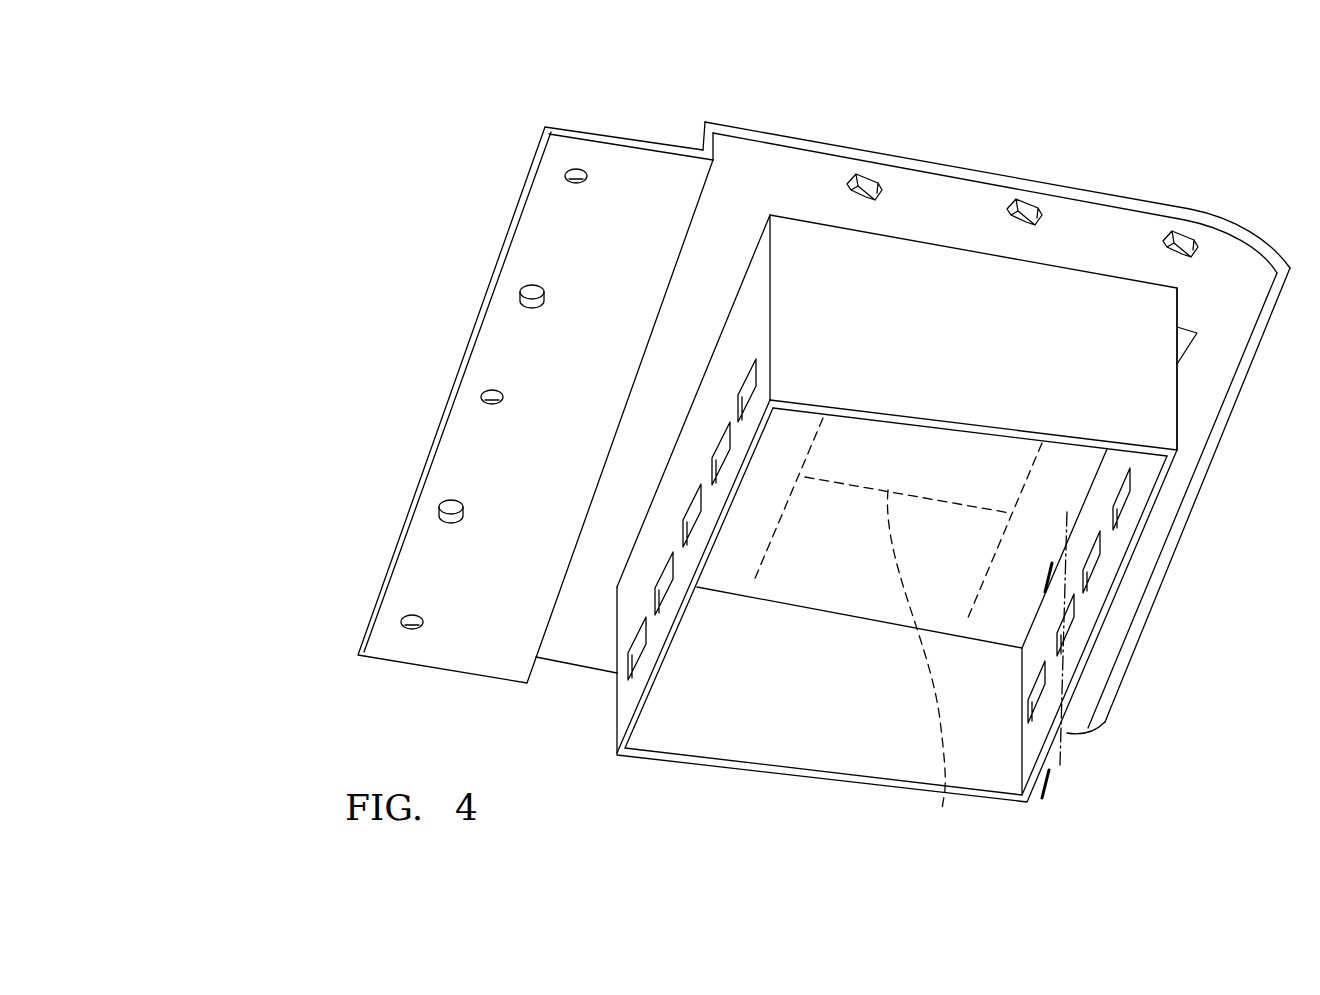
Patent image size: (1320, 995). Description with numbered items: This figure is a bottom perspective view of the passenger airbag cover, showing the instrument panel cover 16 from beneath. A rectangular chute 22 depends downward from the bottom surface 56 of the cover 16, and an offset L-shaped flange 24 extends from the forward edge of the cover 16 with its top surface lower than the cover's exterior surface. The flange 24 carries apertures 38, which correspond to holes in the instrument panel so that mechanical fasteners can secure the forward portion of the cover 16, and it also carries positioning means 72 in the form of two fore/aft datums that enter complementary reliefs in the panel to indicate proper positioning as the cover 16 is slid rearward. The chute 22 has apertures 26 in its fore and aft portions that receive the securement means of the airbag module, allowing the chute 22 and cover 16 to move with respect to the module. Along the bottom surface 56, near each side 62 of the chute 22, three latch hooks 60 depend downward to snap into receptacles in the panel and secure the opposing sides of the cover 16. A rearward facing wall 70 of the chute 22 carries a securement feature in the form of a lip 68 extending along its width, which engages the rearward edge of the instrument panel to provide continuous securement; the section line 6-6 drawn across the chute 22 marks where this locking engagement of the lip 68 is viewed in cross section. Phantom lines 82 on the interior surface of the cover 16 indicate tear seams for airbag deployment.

The instrument panel cover 16 is at (913, 395).
The L-shaped flange 24 is at (637, 140).
The apertures 38 is at (575, 177).
The positioning means (fore/aft datums) 72 is at (528, 300).
The side attachment means (latch hooks) 60 is at (872, 178).
The bottom surface 56 is at (1100, 225).
The side of chute 62 is at (942, 346).
The securement feature (lip) 68 is at (1187, 340).
The rearward facing wall 70 is at (1177, 403).
The chute 22 is at (926, 540).
The apertures 26 is at (1087, 570).
The phantom lines (tear seams) 82 is at (897, 628).
The section line 6- 6 is at (1050, 672).